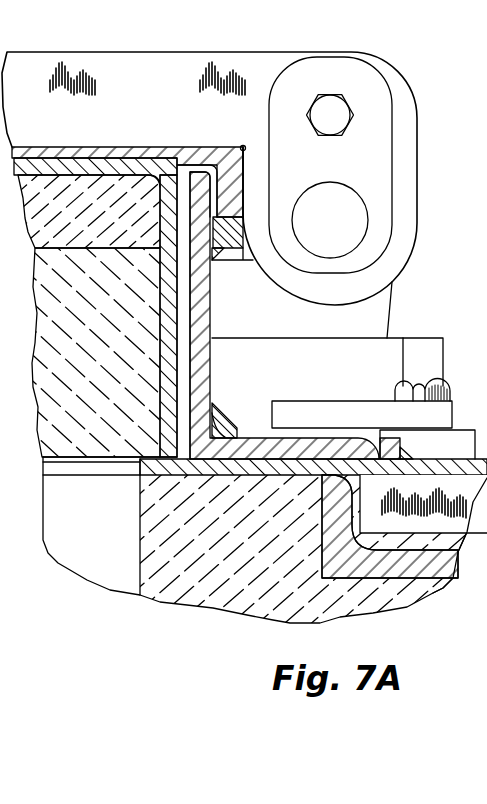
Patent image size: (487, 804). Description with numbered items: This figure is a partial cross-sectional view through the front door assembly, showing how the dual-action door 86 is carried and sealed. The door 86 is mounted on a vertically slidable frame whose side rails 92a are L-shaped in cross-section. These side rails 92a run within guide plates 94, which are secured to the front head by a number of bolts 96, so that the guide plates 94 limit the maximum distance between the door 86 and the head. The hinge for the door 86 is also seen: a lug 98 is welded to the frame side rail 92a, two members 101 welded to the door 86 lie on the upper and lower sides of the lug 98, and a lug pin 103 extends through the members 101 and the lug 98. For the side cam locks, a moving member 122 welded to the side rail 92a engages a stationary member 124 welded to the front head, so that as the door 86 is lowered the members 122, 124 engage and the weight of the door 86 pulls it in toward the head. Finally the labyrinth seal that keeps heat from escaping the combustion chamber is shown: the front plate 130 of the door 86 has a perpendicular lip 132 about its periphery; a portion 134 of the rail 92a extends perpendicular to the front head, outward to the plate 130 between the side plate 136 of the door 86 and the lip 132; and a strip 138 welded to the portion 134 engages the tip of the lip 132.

The members 101 is at (210, 20).
The lug pin 103 is at (357, 212).
The front plate 130 is at (115, 147).
The perpendicular lip 132 is at (230, 157).
The side plates 136 is at (43, 167).
The portions 134 is at (212, 312).
The strips 138 is at (242, 257).
The side rails 92a is at (212, 380).
The moving members 122 is at (342, 377).
The stationary members 124 is at (432, 345).
The bolts 96 is at (427, 382).
The guide plates 94 is at (445, 410).
The lugs 98 is at (396, 285).
The dual-action door 86 is at (116, 359).